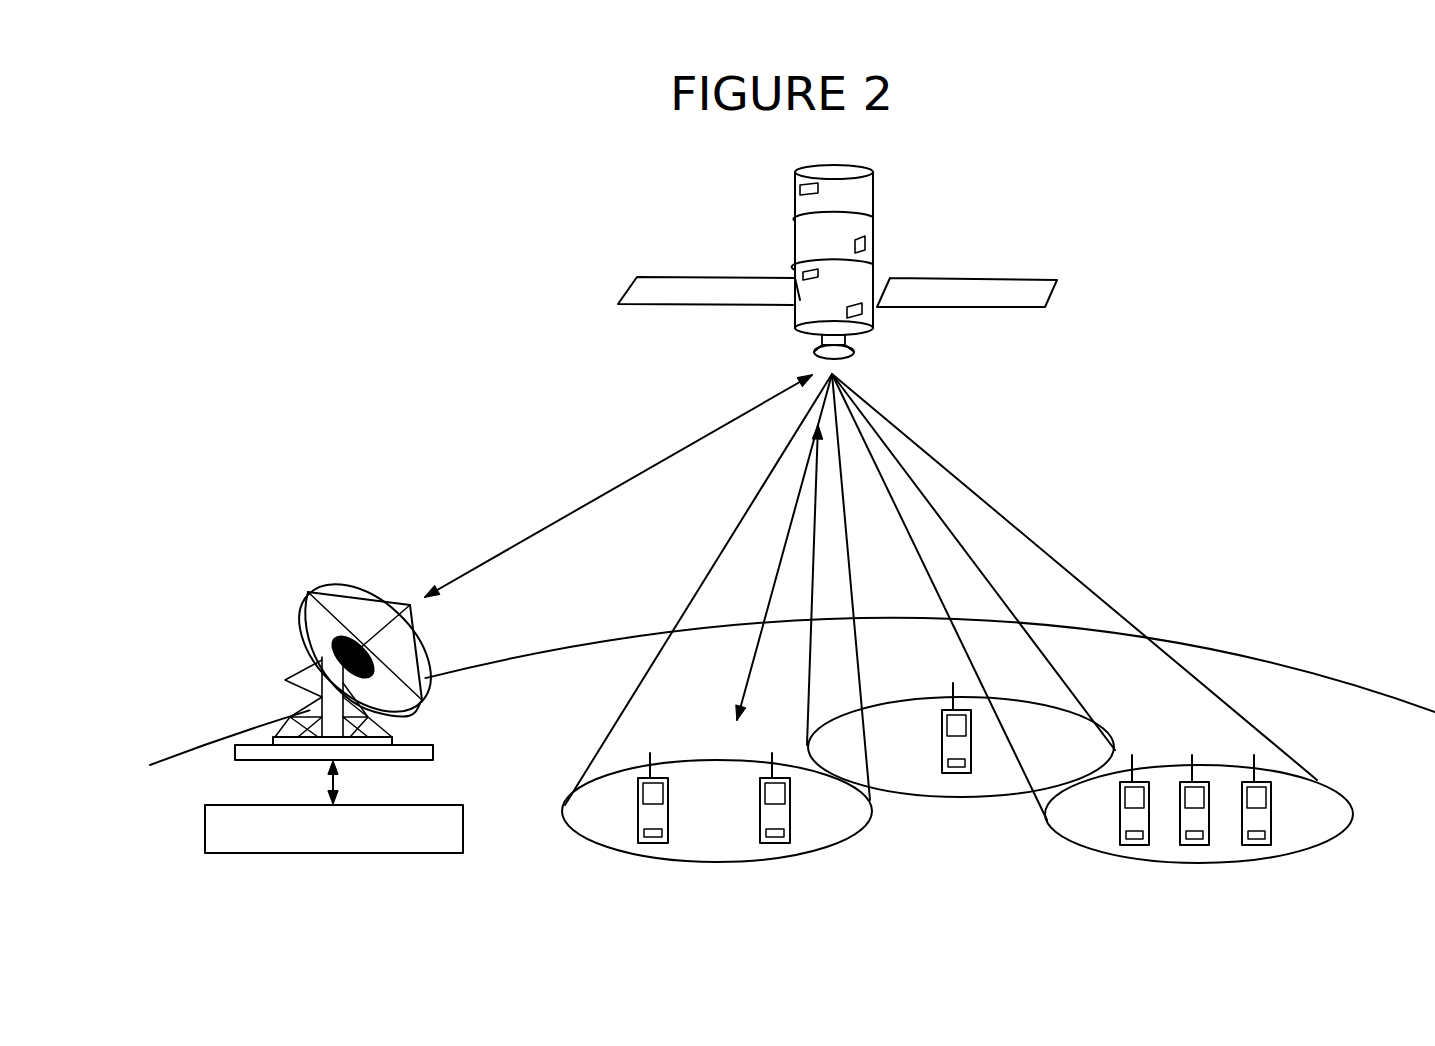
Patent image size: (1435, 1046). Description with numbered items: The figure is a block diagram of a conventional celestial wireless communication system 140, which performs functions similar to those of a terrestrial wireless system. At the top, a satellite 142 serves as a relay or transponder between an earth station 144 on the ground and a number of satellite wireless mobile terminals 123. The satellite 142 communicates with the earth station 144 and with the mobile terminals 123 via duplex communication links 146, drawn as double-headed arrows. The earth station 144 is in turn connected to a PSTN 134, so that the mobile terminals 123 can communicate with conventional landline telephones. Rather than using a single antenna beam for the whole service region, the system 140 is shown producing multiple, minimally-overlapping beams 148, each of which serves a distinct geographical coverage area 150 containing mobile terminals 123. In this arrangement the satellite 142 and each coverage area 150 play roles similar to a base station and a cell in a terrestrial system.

The celestial wireless communication system 140 is at (365, 210).
The satellite 142 is at (915, 228).
The earth station 144 is at (265, 760).
The PSTN 134 is at (463, 827).
The duplex communication link 146 is at (608, 488).
The beam 148 is at (728, 542).
The coverage area 150 is at (740, 860).
The satellite wireless mobile terminal 123 is at (640, 823).